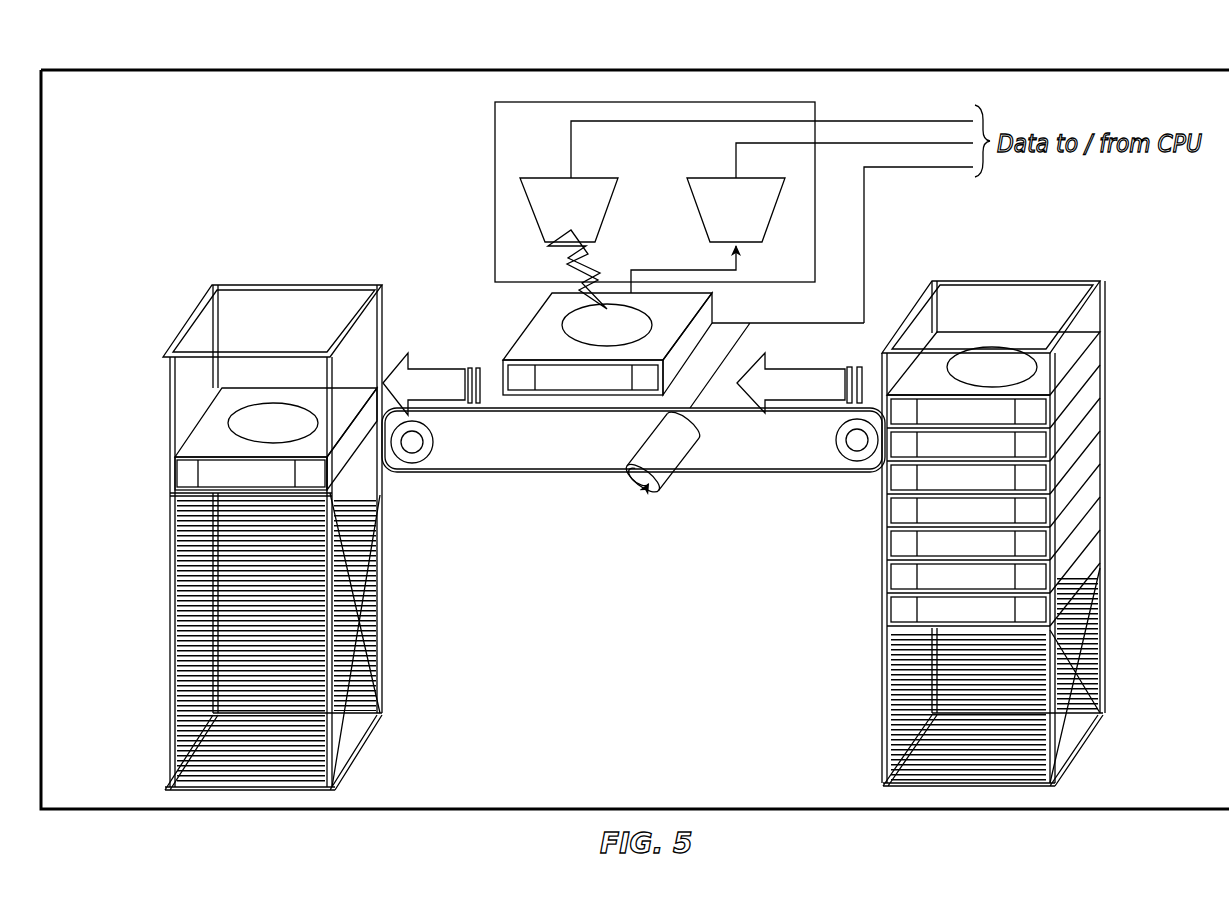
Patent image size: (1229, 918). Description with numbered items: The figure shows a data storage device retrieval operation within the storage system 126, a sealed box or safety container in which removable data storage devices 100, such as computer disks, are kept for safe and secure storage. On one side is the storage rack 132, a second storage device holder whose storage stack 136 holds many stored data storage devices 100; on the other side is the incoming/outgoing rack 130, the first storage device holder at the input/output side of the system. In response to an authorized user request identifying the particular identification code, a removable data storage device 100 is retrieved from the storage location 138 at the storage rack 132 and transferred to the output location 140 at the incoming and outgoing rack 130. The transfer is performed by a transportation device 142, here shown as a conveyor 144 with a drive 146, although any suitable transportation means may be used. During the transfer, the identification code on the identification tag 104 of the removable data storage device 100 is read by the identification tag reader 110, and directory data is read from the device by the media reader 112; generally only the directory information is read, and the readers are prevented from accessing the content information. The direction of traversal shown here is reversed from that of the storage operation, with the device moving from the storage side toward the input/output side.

The removable data storage device 100 is at (437, 391).
The identification tag 104 is at (625, 323).
The identification tag reader 110 is at (589, 177).
The media reader 112 is at (718, 177).
The storage system 126 is at (649, 66).
The incoming/outgoing rack 130 is at (229, 533).
The storage rack 132 is at (987, 511).
The storage stack 136 is at (878, 544).
The storage location 138 is at (1029, 277).
The output location 140 is at (176, 312).
The transportation device 142 is at (633, 435).
The conveyor 144 is at (425, 455).
The drive 146 is at (650, 498).